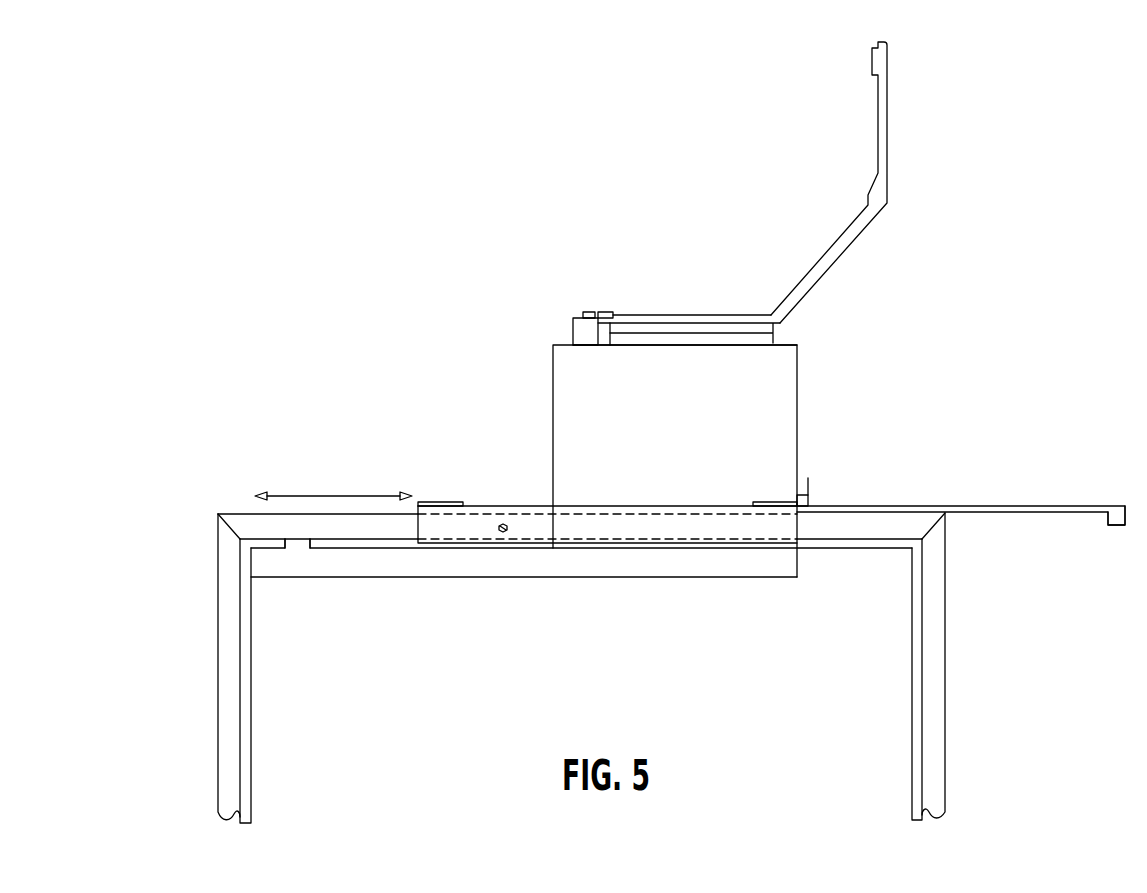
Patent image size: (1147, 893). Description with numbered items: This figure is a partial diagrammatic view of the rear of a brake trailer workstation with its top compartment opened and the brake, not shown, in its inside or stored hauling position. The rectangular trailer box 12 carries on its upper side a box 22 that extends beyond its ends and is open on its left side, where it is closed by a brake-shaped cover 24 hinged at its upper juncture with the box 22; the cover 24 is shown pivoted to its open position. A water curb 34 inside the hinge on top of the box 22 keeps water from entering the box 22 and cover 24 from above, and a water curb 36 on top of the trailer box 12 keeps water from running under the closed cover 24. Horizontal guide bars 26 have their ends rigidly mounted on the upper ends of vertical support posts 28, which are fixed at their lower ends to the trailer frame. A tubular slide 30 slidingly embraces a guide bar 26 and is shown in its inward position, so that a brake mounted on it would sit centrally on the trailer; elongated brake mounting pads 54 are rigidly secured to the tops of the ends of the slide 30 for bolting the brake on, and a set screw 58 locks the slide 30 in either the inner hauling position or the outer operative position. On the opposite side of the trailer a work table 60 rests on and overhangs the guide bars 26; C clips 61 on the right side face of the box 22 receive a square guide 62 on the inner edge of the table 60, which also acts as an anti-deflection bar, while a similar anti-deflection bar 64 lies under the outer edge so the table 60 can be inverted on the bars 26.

The rectangular box 12 is at (579, 668).
The box 22 is at (681, 449).
The brake-shaped cover 24 is at (794, 303).
The horizontal guide bar 26 is at (362, 528).
The vertical support post 28 is at (228, 603).
The slide 30 is at (444, 530).
The water curb 34 is at (573, 330).
The water curb 36 is at (297, 543).
The brake mounting pad 54 is at (455, 501).
The set screw 58 is at (503, 533).
The work table 60 is at (1062, 505).
The "C" clip 61 is at (808, 481).
The square guide 62 is at (808, 501).
The anti-deflection bar 64 is at (1117, 527).